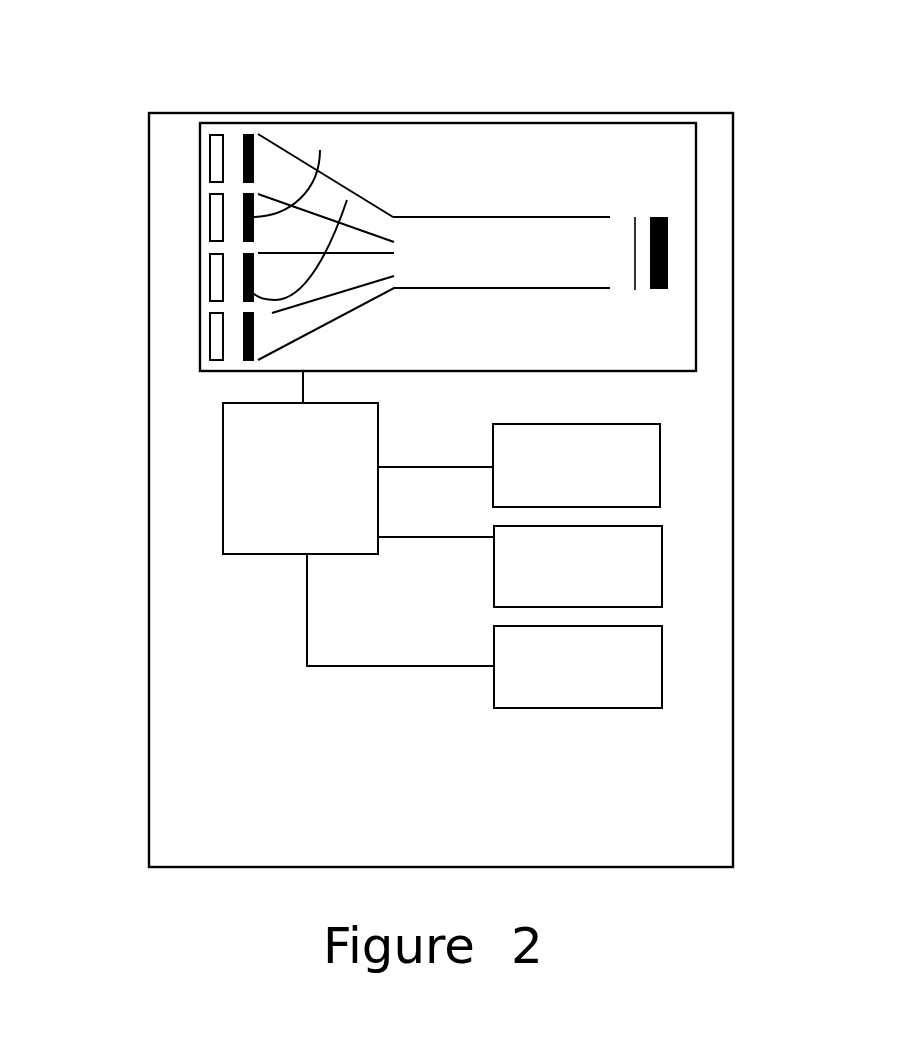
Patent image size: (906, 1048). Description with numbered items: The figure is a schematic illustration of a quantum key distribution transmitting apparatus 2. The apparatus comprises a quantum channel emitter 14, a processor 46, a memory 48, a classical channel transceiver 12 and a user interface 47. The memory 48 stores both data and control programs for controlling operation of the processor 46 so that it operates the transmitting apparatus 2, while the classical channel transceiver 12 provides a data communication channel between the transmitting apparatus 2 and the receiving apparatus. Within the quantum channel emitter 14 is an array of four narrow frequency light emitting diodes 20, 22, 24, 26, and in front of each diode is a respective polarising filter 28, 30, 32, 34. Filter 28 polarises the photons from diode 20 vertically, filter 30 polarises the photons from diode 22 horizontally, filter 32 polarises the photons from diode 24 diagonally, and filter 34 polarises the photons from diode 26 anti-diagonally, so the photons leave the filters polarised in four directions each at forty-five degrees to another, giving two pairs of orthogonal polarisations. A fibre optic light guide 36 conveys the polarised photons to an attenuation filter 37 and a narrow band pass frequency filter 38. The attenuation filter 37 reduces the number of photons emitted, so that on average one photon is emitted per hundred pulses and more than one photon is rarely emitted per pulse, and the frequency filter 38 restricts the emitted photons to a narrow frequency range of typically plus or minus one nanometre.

The QKD transmitting apparatus 2 is at (707, 348).
The classical channel transceiver 12 is at (662, 571).
The quantum channel emitter 14 is at (200, 338).
The light emitting diode 20 is at (210, 159).
The light emitting diode 22 is at (210, 219).
The light emitting diode 24 is at (210, 276).
The light emitting diode 26 is at (210, 324).
The polarising filter 28 is at (250, 137).
The polarising filter 30 is at (320, 150).
The polarising filter 32 is at (347, 200).
The polarising filter 34 is at (249, 353).
The fibre optic light guide 36 is at (405, 217).
The attenuation filter 37 is at (637, 227).
The narrow band pass frequency filter 38 is at (667, 242).
The processor 46 is at (223, 480).
The user interface 47 is at (662, 668).
The memory 48 is at (660, 472).